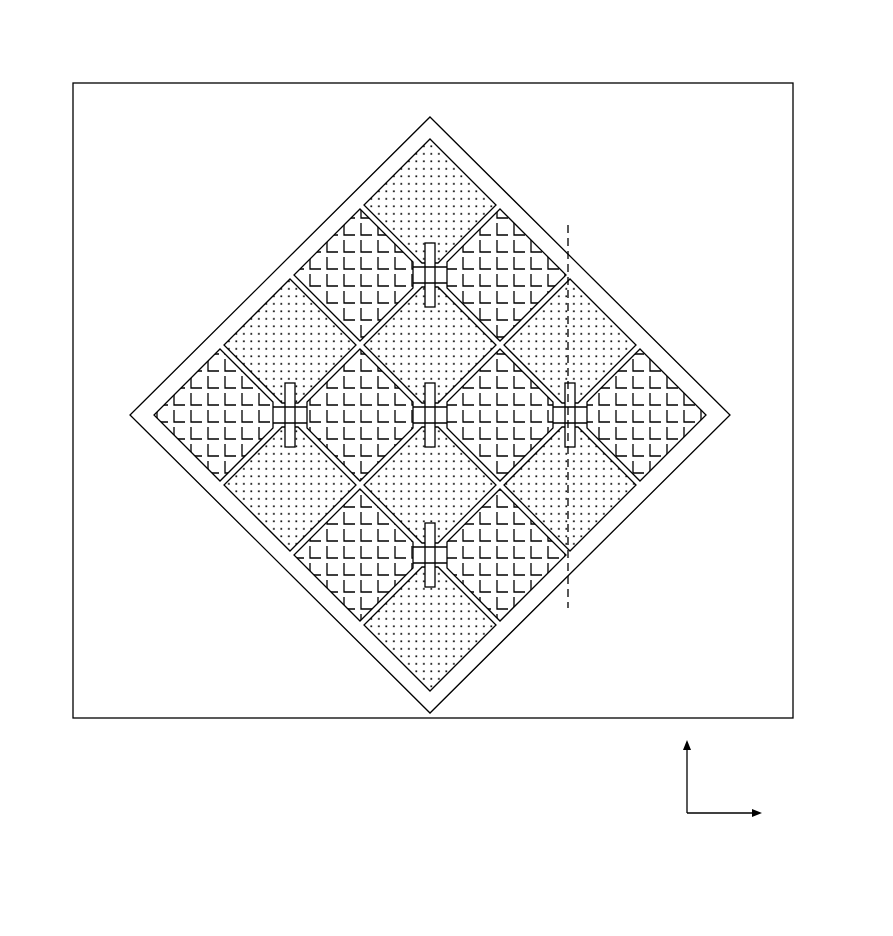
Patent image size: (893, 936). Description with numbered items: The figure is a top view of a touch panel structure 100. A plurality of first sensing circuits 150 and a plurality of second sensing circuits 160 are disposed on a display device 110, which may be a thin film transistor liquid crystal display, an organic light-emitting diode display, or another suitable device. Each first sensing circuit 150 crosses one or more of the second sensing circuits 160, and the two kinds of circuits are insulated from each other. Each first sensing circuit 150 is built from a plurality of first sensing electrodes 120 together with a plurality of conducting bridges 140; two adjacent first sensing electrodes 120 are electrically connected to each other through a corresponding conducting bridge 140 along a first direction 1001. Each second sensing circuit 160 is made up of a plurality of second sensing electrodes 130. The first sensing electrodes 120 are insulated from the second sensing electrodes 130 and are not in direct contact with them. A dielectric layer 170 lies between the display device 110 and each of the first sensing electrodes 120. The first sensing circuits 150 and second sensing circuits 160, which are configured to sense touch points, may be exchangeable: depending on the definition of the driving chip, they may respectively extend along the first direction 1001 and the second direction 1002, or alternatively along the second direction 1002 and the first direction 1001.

The touch panel structure 100 is at (80, 28).
The display device 110 is at (147, 130).
The first sensing electrode 120 is at (587, 513).
The second sensing electrode 130 is at (650, 393).
The conducting bridge 140 is at (432, 246).
The first sensing circuit 150 is at (240, 296).
The second sensing circuit 160 is at (311, 231).
The dielectric layer 170 is at (657, 477).
The first direction 1001 is at (658, 774).
The second direction 1002 is at (739, 831).